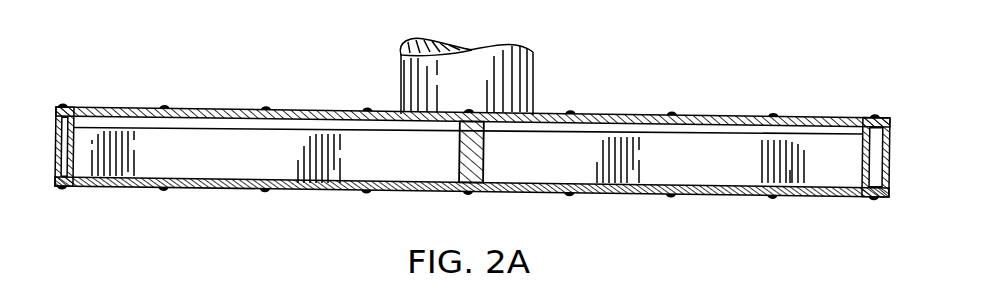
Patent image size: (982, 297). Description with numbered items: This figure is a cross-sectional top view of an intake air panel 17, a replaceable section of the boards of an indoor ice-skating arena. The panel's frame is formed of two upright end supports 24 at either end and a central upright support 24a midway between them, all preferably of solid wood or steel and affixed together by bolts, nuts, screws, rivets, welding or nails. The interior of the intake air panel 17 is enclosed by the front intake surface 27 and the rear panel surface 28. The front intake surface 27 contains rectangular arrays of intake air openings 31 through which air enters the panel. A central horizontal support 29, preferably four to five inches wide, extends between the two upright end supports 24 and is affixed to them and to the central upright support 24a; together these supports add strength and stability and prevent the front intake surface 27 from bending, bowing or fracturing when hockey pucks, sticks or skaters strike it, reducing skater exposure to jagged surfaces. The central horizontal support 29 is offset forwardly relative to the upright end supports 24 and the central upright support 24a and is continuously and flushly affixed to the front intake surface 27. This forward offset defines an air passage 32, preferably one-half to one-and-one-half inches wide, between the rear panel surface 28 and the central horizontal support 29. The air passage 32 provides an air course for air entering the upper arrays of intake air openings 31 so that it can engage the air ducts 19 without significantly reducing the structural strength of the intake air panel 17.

The intake air panel 17 is at (653, 92).
The air duct 19 is at (472, 63).
The upright end support 24 is at (57, 128).
The central upright support 24a is at (476, 182).
The front intake surface 27 is at (450, 192).
The rear panel surface 28 is at (321, 113).
The central horizontal support 29 is at (168, 166).
The intake air openings 31 is at (354, 189).
The air passage 32 is at (232, 122).